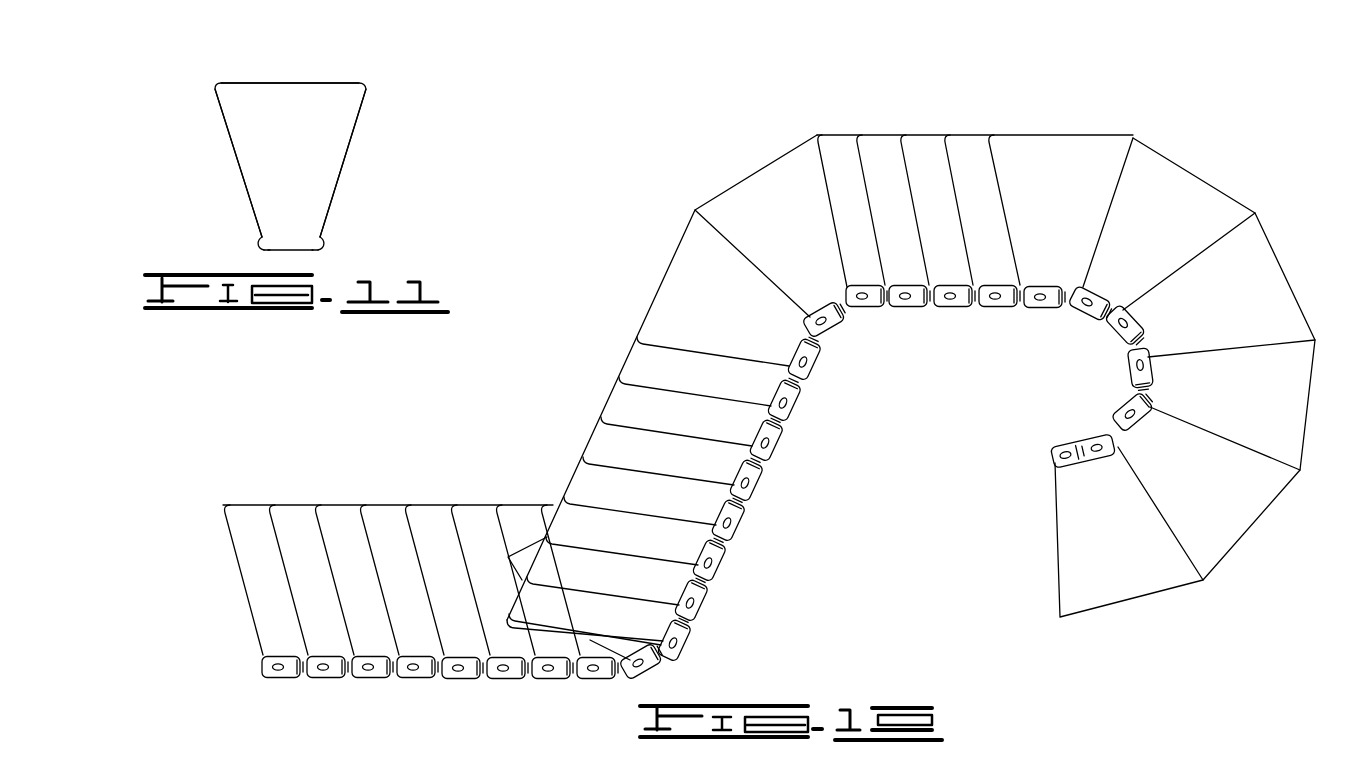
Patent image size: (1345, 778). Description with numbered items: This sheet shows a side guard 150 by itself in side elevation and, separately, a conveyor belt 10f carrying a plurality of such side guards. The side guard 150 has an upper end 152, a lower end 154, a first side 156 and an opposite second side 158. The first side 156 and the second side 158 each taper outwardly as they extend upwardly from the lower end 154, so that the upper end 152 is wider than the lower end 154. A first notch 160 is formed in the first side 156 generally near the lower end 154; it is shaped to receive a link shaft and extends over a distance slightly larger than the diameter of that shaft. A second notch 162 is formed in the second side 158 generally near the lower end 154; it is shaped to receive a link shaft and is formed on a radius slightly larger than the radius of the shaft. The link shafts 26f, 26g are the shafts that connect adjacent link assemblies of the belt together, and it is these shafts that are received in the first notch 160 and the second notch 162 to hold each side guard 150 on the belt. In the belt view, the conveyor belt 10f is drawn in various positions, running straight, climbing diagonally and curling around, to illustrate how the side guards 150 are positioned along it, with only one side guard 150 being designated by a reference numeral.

In FIG. 11, the side guard 150 is at (297, 110).
In FIG. 13, the side guard 150 is at (772, 198).
In FIG. 11, the upper end 152 is at (247, 82).
In FIG. 11, the lower end 154 is at (300, 253).
In FIG. 11, the first side 156 is at (242, 177).
In FIG. 11, the second side 158 is at (353, 140).
In FIG. 11, the first notch 160 is at (262, 238).
In FIG. 11, the second notch 162 is at (306, 240).
In FIG. 11, the link shaft 26f is at (265, 247).
In FIG. 11, the link shaft 26g is at (318, 243).
In FIG. 13, the conveyor belt 10f is at (798, 402).